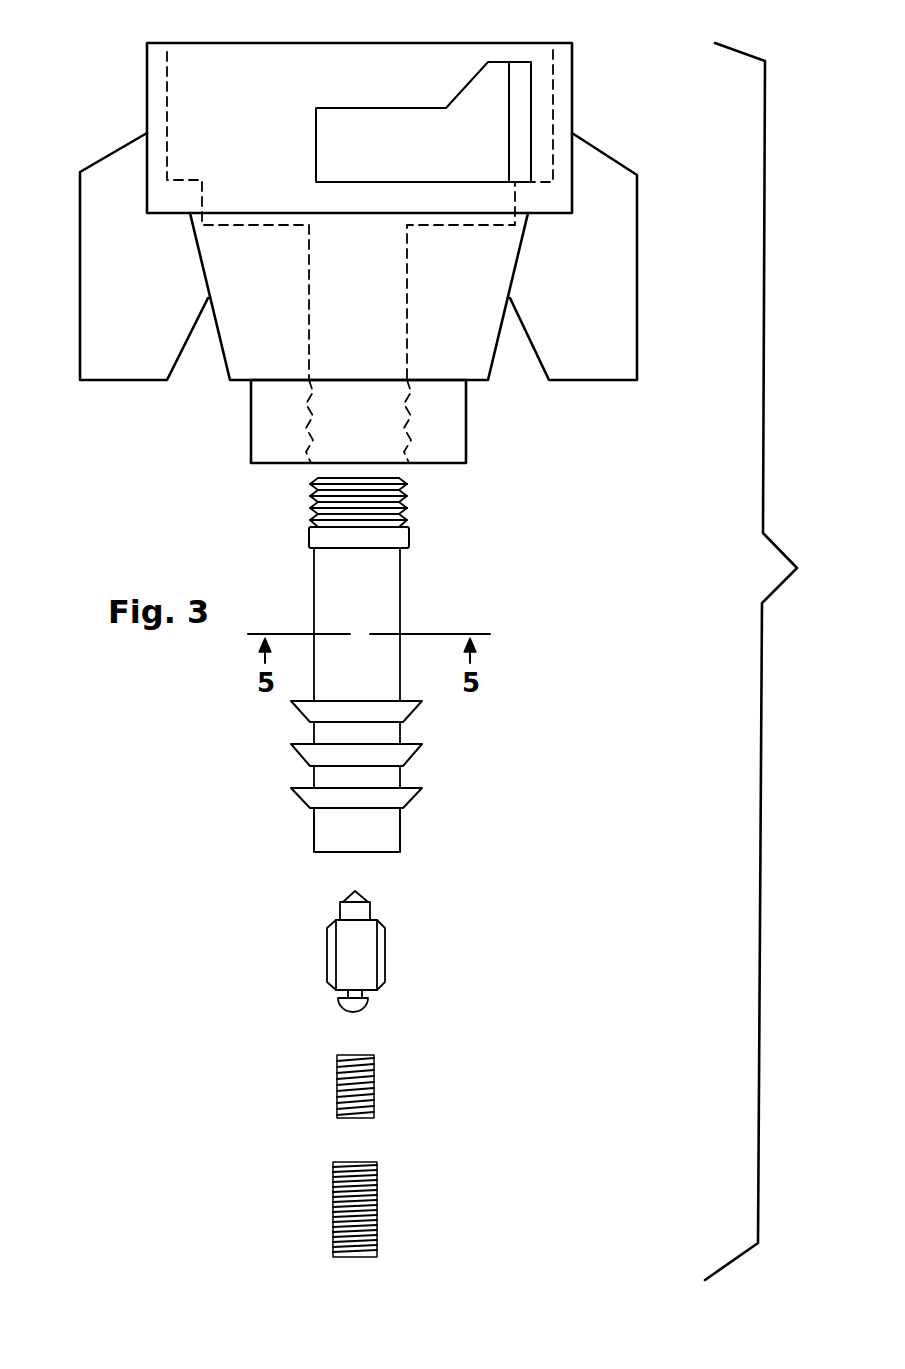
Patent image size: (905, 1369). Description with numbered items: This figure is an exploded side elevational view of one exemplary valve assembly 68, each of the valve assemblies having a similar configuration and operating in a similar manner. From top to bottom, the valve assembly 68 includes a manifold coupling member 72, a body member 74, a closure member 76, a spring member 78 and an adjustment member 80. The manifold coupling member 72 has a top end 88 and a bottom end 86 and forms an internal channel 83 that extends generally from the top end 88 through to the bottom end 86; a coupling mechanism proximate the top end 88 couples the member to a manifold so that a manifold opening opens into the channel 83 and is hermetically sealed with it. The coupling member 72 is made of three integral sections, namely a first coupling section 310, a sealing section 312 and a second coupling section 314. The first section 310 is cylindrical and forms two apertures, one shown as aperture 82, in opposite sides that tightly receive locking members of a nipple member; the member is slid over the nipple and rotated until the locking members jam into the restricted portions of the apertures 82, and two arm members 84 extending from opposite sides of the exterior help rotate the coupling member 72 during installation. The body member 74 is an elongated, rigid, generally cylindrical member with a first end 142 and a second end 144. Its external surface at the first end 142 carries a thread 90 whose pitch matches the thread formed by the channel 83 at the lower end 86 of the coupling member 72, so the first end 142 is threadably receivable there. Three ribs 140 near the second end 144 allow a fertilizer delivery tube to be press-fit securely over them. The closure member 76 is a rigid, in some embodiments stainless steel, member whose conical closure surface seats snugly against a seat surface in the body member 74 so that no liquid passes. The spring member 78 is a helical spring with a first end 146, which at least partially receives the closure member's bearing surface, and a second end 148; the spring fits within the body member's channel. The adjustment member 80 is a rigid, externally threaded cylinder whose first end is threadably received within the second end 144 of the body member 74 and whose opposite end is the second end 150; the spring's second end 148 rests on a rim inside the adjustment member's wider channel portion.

The valve assembly 68 is at (772, 661).
The manifold coupling member 72 is at (457, 315).
The body member 74 is at (372, 568).
The closure member 76 is at (408, 952).
The spring member 78 is at (374, 1087).
The adjustment member 80 is at (377, 1185).
The aperture 82 is at (316, 129).
The internal channel 83 is at (170, 115).
The arm member 84 is at (131, 380).
The bottom end 86 is at (443, 465).
The top end 88 is at (405, 43).
The thread 90 is at (310, 500).
The ribs 140 is at (403, 722).
The first end 142 is at (407, 480).
The second end 144 is at (350, 838).
The first end 146 is at (340, 1057).
The second end 148 is at (337, 1110).
The second end 150 is at (362, 1238).
The first coupling section 310 is at (165, 92).
The sealing section 312 is at (492, 263).
The second coupling section 314 is at (397, 430).